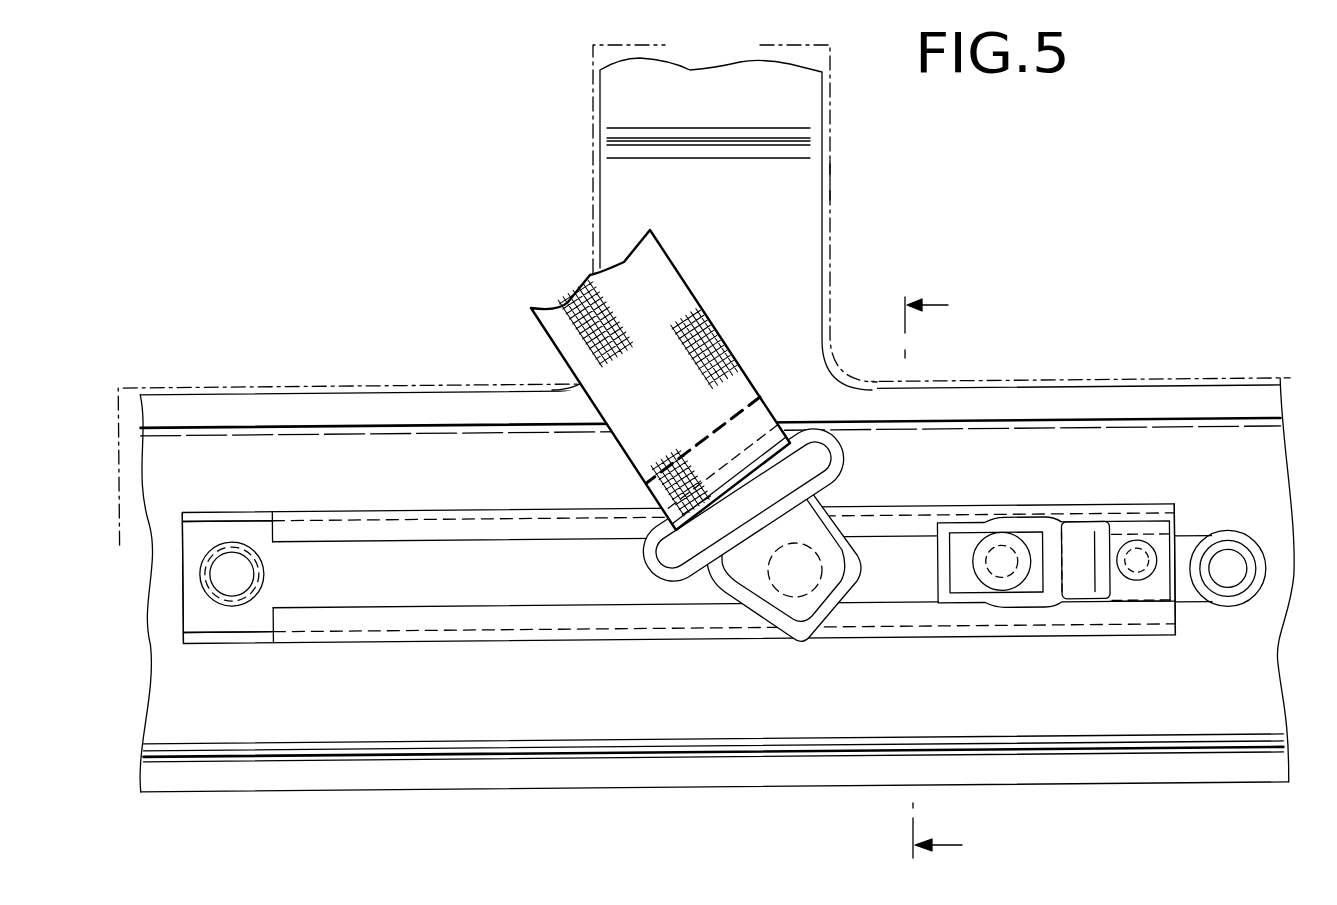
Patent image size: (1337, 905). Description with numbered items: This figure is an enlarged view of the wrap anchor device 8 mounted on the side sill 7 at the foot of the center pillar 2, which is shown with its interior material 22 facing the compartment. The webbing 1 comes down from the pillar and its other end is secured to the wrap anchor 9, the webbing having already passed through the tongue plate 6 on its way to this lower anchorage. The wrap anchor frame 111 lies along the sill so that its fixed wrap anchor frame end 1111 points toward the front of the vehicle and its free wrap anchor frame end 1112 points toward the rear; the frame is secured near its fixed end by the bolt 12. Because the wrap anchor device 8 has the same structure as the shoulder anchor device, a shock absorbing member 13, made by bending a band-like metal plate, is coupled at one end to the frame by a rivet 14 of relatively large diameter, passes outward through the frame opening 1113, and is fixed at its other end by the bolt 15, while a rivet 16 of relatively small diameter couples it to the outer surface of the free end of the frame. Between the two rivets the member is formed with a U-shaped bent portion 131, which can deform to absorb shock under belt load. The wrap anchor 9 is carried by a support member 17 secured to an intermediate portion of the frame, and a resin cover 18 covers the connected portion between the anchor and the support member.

The webbing 1 is at (683, 298).
The center pillar 2 is at (797, 97).
The interior material 22 is at (832, 177).
The tongue plate 6 is at (948, 575).
The side sill 7 is at (1068, 410).
The wrap anchor device 8 is at (896, 650).
The wrap anchor 9 is at (842, 460).
The bolt 12 is at (232, 562).
The shock absorbing member 13 is at (1038, 606).
The U-shaped bent portion 131 is at (1079, 553).
The rivet 14 is at (1002, 556).
The bolt 15 is at (1226, 558).
The rivet 16 is at (1137, 557).
The support member 17 is at (780, 590).
The cover 18 is at (852, 573).
The wrap anchor frame 111 is at (424, 645).
The fixed wrap anchor frame end 1111 is at (222, 612).
The free wrap anchor frame end 1112 is at (1153, 622).
The guide rail stopper 1113 is at (1107, 600).